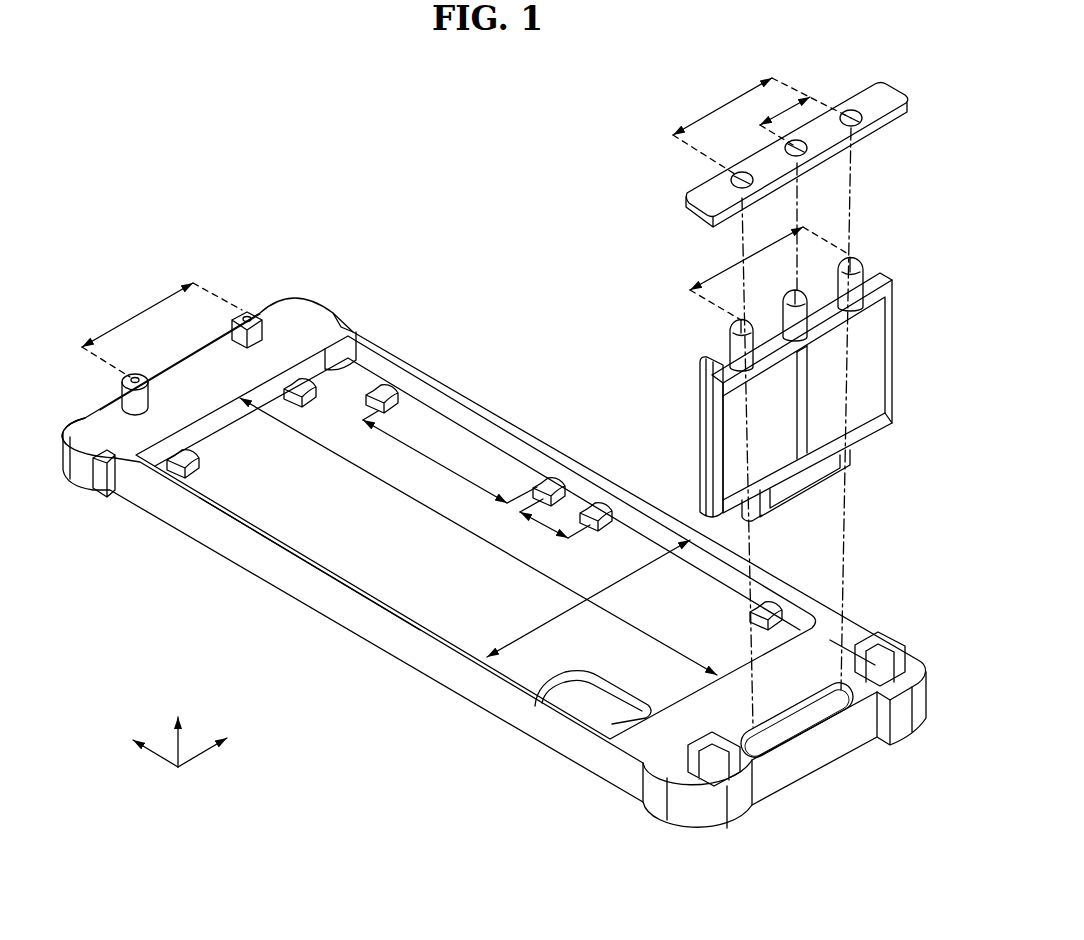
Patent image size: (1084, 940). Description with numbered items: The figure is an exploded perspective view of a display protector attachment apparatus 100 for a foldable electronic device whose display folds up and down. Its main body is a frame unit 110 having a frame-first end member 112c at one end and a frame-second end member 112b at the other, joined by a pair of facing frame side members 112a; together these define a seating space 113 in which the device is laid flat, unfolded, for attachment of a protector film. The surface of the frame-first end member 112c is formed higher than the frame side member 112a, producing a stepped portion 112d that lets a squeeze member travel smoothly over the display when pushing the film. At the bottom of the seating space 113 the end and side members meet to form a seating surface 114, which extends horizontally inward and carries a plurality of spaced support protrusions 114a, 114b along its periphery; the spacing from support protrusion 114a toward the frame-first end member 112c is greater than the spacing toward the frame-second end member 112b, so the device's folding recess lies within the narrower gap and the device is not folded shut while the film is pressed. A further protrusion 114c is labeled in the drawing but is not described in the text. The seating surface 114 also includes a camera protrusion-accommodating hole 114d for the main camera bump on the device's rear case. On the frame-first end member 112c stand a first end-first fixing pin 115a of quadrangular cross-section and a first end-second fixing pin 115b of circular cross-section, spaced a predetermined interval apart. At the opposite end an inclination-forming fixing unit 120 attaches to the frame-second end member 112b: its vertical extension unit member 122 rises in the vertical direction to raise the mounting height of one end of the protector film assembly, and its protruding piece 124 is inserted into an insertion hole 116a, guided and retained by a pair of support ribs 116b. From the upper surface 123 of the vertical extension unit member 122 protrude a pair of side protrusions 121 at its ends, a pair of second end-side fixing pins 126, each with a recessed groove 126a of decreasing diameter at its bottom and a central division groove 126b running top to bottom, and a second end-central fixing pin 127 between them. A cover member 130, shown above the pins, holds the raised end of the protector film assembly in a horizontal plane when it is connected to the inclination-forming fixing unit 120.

The display protector attachment apparatus 100 is at (378, 733).
The frame unit 110 is at (607, 790).
The frame side member 112a is at (243, 553).
The frame-second end member 112b is at (850, 640).
The frame-first end member 112c is at (187, 357).
The stepped portion 112d is at (92, 416).
The seating space 113 is at (343, 403).
The seating surface 114 is at (385, 567).
The support protrusion 114a is at (548, 476).
The support protrusion 114b is at (600, 503).
The third protrusion 114c is at (108, 492).
The camera protrusion-accommodating hole 114d is at (595, 710).
The first end-first fixing pin 115a is at (247, 311).
The first end-second fixing pin 115b is at (126, 380).
The insertion hole 116a is at (800, 722).
The support ribs 116b is at (893, 642).
The inclination-forming fixing unit 120 is at (688, 357).
The side protrusions 121 is at (707, 358).
The vertical extension unit member 122 is at (877, 432).
The upper surface 123 is at (800, 334).
The protruding piece 124 is at (813, 480).
The second end-side fixing pins 126 is at (840, 253).
The recessed groove 126a is at (818, 317).
The division groove 126b is at (853, 258).
The second end-central fixing pin 127 is at (812, 345).
The cover member 130 is at (682, 216).